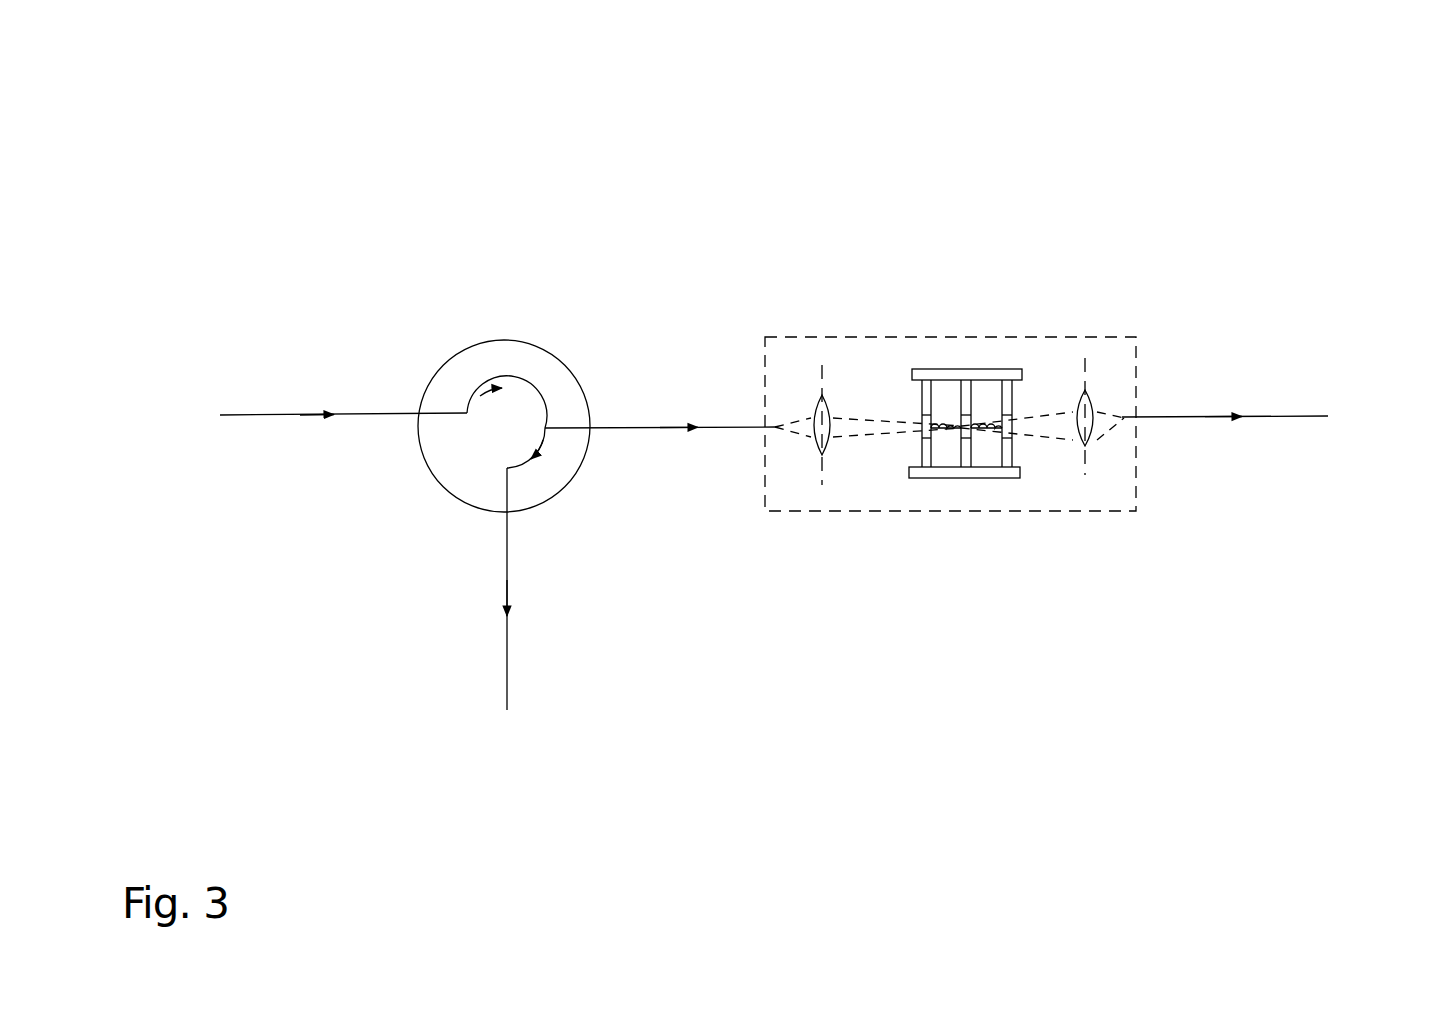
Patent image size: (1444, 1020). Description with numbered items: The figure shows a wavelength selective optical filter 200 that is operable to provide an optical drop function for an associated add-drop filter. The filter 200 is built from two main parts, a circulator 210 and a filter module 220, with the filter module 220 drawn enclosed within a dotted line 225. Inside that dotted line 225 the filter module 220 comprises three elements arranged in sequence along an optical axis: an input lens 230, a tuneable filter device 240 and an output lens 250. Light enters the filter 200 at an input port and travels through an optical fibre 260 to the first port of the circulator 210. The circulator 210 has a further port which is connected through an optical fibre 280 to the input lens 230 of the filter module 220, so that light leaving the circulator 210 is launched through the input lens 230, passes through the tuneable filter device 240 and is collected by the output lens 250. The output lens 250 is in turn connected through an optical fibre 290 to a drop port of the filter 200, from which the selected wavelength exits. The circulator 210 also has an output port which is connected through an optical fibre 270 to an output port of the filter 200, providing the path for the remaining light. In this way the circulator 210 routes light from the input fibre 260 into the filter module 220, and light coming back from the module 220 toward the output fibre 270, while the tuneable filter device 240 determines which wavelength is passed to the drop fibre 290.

The wavelength selective optical filter 200 is at (1212, 106).
The circulator 210 is at (497, 355).
The filter module 220 is at (1092, 326).
The dotted line 225 is at (834, 335).
The input lens 230 is at (818, 447).
The tuneable filter device 240 is at (962, 472).
The output lens 250 is at (1087, 442).
The optical fibre 260 is at (288, 418).
The optical fibre 270 is at (509, 675).
The optical fibre 280 is at (653, 432).
The optical fibre 290 is at (1271, 414).